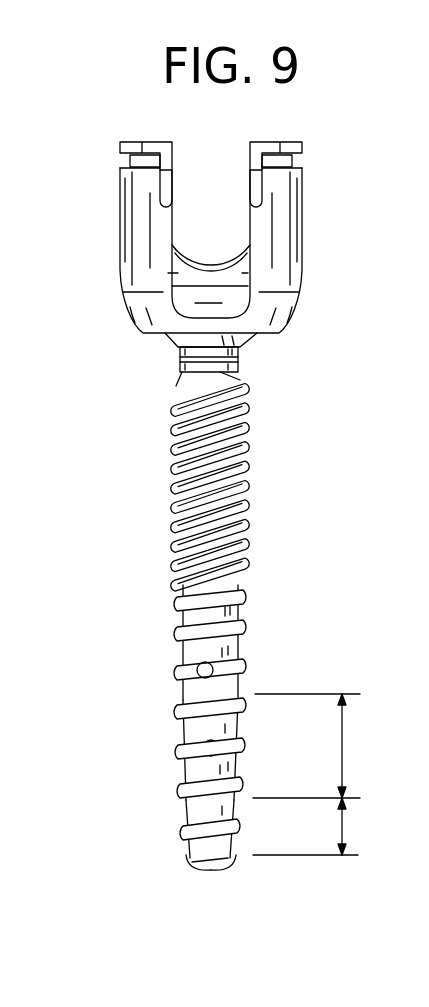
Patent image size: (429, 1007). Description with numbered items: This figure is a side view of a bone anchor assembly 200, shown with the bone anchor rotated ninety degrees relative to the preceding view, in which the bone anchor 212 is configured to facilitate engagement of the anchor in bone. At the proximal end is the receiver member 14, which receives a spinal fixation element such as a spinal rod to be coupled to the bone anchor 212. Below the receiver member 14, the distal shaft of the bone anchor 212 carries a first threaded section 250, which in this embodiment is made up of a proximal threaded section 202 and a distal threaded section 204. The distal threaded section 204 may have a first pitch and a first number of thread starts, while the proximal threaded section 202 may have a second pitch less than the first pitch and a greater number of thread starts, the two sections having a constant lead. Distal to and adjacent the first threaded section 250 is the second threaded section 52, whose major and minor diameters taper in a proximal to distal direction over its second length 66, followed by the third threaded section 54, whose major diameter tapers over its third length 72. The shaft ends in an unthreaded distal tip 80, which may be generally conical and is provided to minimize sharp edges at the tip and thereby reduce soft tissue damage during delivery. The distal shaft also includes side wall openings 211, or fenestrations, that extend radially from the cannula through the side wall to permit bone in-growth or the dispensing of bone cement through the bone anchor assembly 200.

The bone anchor assembly 200 is at (320, 156).
The receiver member 14 is at (290, 207).
The bone anchor 212 is at (353, 491).
The first threaded section 250 is at (141, 385).
The proximal threaded section 202 is at (262, 382).
The distal threaded section 204 is at (262, 578).
The side wall openings 211 is at (200, 673).
The second threaded section 52 is at (256, 771).
The third threaded section 54 is at (249, 851).
The unthreaded distal tip 80 is at (232, 868).
The second length 66 is at (347, 738).
The third length 72 is at (347, 832).